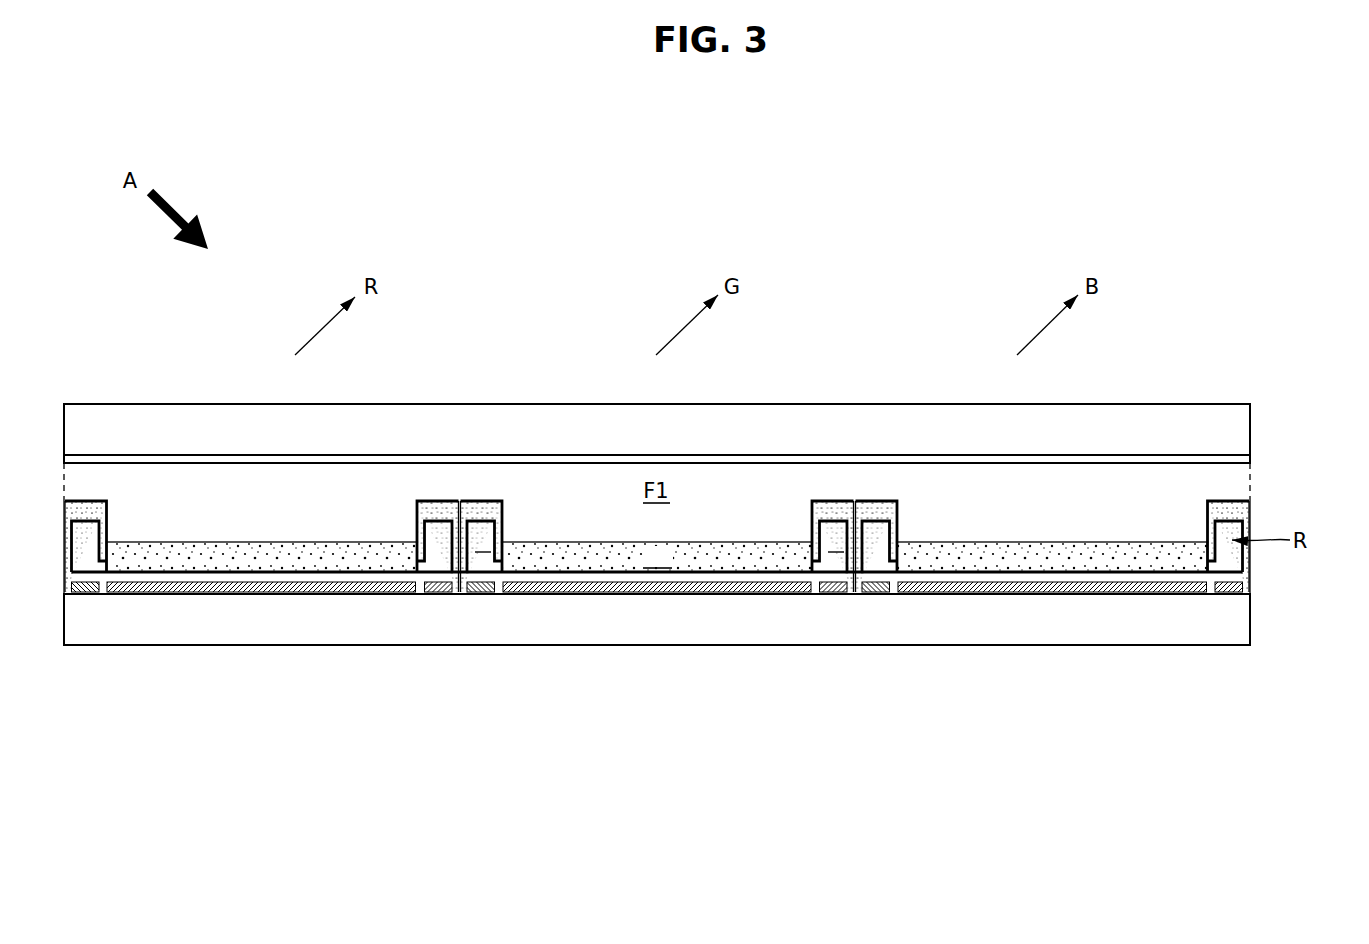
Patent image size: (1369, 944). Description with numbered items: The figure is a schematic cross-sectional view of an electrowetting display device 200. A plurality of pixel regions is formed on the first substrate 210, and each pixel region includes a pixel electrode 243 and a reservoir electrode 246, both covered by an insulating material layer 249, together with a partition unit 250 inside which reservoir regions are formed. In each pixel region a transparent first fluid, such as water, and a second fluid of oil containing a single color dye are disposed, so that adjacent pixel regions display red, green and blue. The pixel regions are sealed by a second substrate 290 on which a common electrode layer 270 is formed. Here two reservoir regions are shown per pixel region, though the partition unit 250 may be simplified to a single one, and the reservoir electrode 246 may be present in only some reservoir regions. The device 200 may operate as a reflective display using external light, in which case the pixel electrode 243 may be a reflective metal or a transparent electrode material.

The electrowetting display device 200 is at (1256, 330).
The first substrate 210 is at (1240, 613).
The pixel electrode 243 is at (650, 593).
The reservoir electrode 246 is at (480, 593).
The insulating material layer 249 is at (718, 577).
The partition unit 250 is at (833, 507).
The common electrode layer 270 is at (1240, 459).
The second substrate 290 is at (1240, 427).